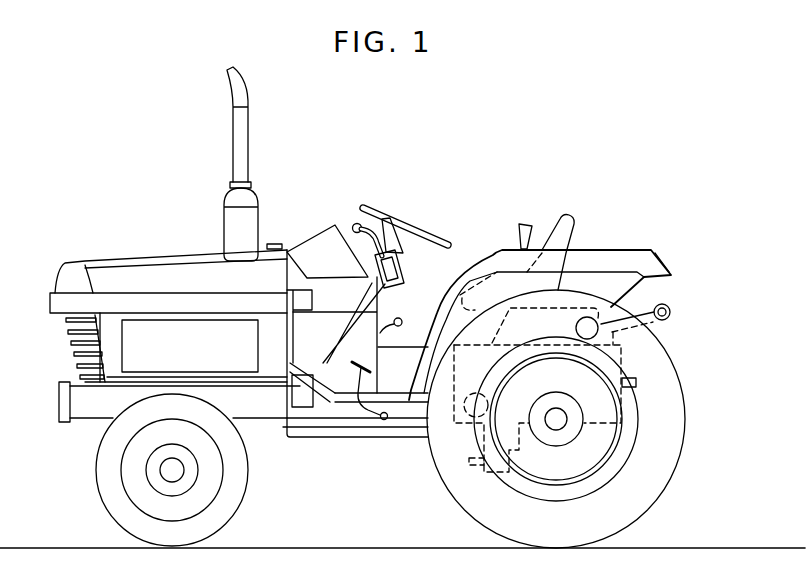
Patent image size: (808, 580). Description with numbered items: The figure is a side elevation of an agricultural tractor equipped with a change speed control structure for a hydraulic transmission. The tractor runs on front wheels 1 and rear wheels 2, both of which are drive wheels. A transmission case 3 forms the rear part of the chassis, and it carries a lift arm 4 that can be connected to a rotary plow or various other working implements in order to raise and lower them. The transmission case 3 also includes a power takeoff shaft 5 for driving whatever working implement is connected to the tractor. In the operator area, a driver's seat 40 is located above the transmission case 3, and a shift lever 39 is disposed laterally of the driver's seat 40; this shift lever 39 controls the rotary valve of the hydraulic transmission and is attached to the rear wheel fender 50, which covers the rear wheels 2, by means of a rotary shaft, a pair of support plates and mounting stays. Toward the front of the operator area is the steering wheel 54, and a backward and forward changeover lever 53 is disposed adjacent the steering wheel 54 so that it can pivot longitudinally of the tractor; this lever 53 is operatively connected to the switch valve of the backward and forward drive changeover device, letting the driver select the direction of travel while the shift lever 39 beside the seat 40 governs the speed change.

The front wheels 1 is at (107, 481).
The rear wheels 2 is at (683, 433).
The transmission case 3 is at (484, 343).
The lift arm 4 is at (672, 309).
The power takeoff shaft 5 is at (637, 382).
The shift lever 39 is at (521, 222).
The driver's seat 40 is at (552, 230).
The rear wheel fender 50 is at (628, 250).
The backward and forward changeover lever 53 is at (355, 222).
The steering wheel 54 is at (404, 213).